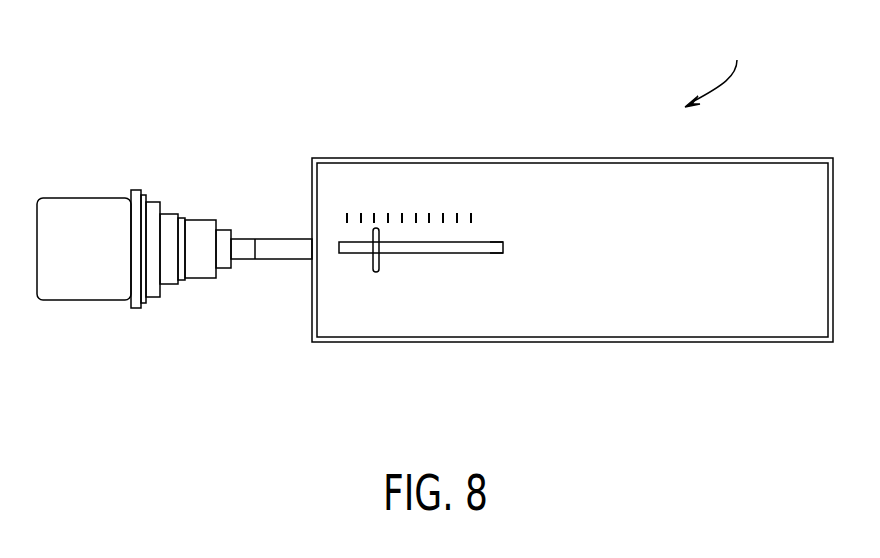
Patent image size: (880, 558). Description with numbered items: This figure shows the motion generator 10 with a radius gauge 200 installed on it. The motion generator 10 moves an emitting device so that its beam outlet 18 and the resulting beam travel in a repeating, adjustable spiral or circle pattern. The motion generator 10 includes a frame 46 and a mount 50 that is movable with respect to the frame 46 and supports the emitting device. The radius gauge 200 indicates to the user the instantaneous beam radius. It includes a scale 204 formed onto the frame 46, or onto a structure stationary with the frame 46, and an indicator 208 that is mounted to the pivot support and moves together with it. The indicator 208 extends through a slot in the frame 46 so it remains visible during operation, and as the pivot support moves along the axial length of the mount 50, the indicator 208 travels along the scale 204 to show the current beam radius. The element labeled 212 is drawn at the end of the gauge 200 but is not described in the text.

The motion generator 10 is at (717, 67).
The beam outlet 18 is at (97, 207).
The mount 50 is at (288, 245).
The frame 46 is at (545, 173).
The scale 204 is at (387, 200).
The radius gauge 200 is at (428, 200).
The indicator 208 is at (375, 272).
The bar end 212 is at (482, 253).